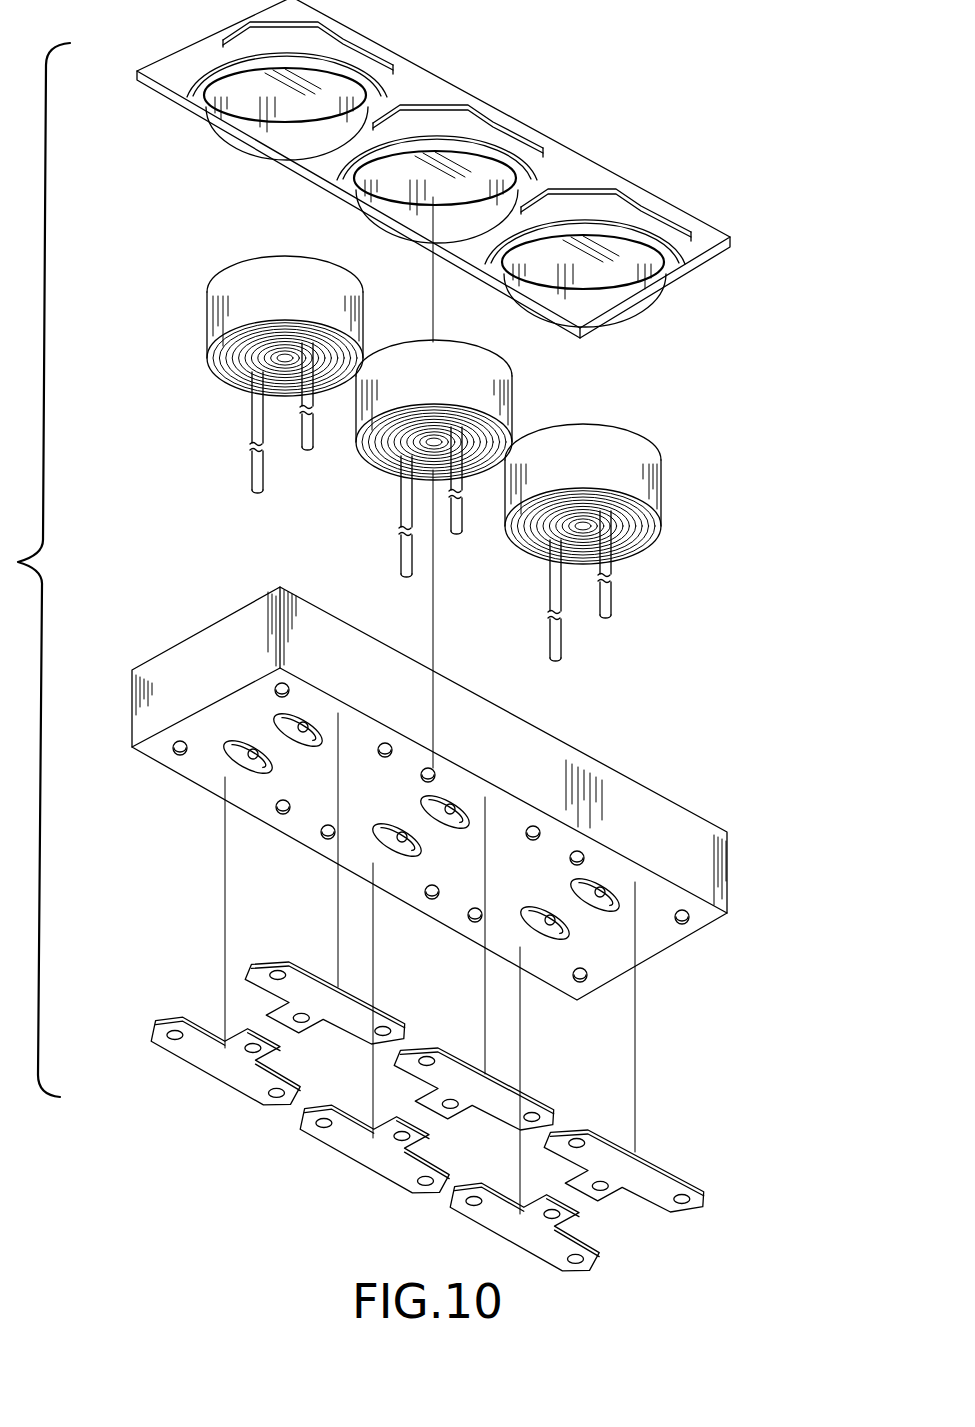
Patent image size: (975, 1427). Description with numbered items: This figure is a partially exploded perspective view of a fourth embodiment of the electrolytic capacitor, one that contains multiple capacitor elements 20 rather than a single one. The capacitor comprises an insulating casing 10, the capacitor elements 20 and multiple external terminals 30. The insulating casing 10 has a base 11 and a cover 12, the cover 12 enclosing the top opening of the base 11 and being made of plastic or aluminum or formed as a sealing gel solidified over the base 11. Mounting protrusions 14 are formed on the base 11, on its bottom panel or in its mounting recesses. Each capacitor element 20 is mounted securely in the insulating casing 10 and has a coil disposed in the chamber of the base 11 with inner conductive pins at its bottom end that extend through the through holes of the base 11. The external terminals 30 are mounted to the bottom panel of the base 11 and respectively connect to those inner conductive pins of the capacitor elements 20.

The insulating casing 10 is at (476, 793).
The base 11 is at (692, 872).
The cover 12 is at (578, 157).
The mounting protrusions 14 is at (292, 697).
The capacitor element 20 is at (518, 392).
The external terminals 30 is at (304, 948).